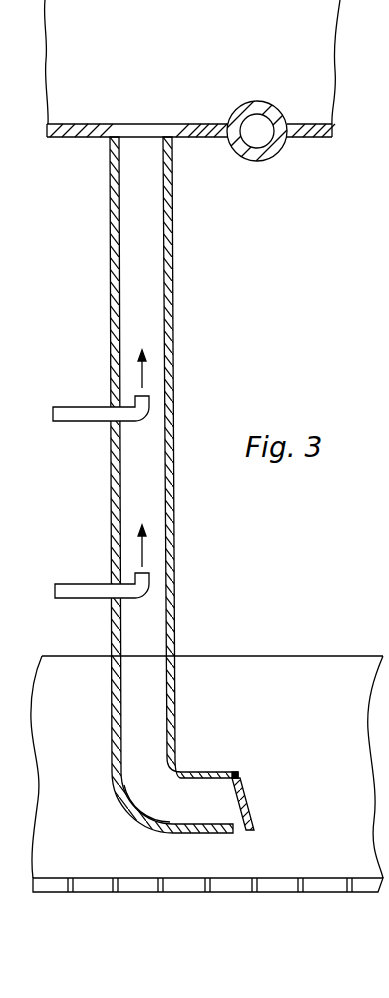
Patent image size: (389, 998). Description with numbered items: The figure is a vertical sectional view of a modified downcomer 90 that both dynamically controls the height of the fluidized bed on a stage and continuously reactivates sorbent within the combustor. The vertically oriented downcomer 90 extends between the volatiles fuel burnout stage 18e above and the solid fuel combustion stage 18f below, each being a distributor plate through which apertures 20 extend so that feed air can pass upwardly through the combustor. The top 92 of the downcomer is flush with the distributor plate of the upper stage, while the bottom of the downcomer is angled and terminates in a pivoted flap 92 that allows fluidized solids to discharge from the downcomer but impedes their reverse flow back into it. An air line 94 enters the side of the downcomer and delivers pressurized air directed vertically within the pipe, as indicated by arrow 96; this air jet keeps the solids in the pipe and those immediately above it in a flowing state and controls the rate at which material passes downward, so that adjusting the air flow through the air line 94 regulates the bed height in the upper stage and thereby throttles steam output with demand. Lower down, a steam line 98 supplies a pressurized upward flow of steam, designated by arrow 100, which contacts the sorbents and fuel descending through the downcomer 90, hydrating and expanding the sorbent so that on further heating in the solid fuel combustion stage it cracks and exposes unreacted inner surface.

The volatiles fuel burnout stage 18e is at (88, 138).
The solid fuel combustion stage 18f is at (80, 892).
The apertures 20 is at (308, 138).
The downcomer 90 is at (174, 339).
The top of downcomer / pivoted flap 92 is at (155, 124).
The air line 94 is at (82, 421).
The air flow arrow 96 is at (143, 379).
The steam line 98 is at (82, 583).
The steam flow arrow 100 is at (143, 552).